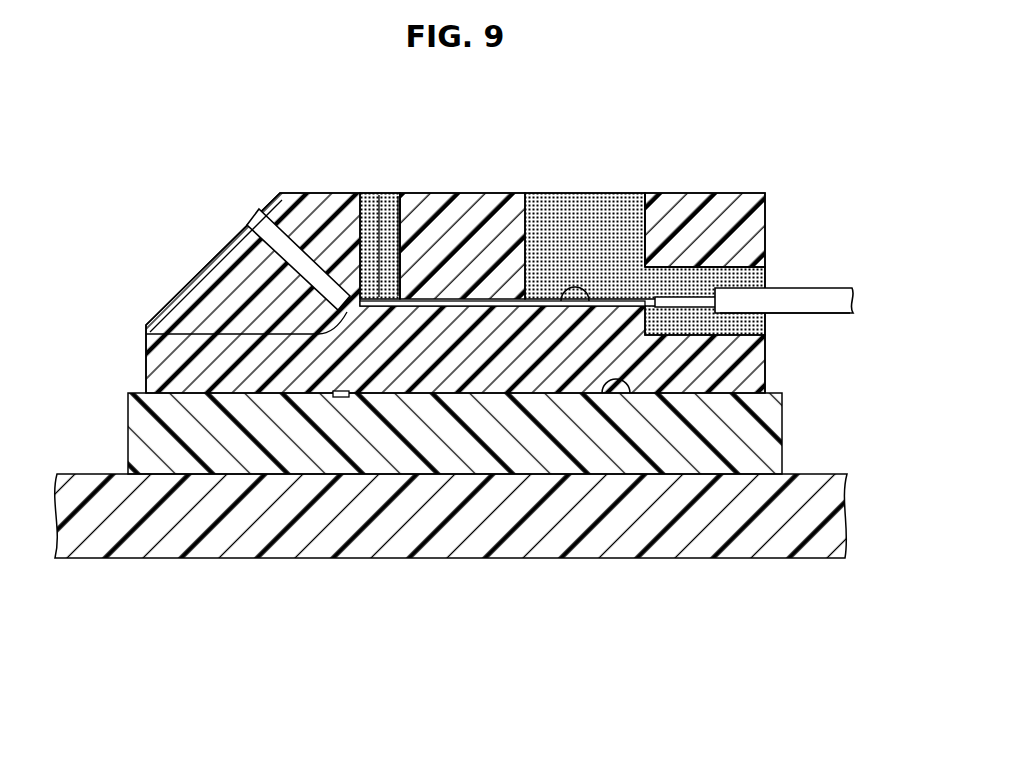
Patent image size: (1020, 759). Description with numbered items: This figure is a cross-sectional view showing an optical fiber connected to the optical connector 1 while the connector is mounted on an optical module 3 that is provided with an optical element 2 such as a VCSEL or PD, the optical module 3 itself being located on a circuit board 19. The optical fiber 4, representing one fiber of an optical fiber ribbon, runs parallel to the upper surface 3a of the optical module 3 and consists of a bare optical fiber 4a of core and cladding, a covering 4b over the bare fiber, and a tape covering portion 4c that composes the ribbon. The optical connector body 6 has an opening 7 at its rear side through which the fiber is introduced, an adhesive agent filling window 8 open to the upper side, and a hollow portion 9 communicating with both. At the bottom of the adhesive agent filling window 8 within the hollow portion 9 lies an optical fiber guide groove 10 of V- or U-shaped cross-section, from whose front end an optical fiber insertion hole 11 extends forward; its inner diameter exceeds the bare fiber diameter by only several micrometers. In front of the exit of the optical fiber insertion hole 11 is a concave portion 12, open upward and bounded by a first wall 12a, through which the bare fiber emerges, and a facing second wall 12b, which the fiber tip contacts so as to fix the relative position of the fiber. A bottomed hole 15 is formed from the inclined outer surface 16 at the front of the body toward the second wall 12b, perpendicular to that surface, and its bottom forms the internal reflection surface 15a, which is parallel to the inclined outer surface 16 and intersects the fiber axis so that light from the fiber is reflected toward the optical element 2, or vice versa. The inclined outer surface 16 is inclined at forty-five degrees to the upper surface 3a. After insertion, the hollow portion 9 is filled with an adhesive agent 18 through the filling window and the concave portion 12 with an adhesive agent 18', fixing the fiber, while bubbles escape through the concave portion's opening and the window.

The optical connector 1 is at (715, 146).
The optical element 2 is at (336, 398).
The optical module 3 is at (772, 412).
The upper surface of the optical module 3a is at (620, 386).
The optical fiber 4 is at (830, 290).
The bare optical fiber 4a is at (452, 306).
The covering 4b is at (688, 305).
The tape covering portion 4c is at (820, 308).
The optical connector body 6 is at (492, 215).
The opening 7 is at (765, 265).
The adhesive agent filling window 8 is at (636, 215).
The hollow portion 9 is at (643, 243).
The optical fiber guide groove 10 is at (578, 302).
The optical fiber insertion hole 11 is at (455, 300).
The concave portion 12 is at (366, 230).
The first wall 12a is at (403, 210).
The second wall 12b is at (378, 285).
The bottomed hole 15 is at (262, 222).
The internal reflection surface 15a is at (146, 336).
The inclined outer surface 16 is at (206, 267).
The adhesive agent 18 is at (645, 220).
The adhesive agent 18' is at (414, 215).
The circuit board 19 is at (813, 540).